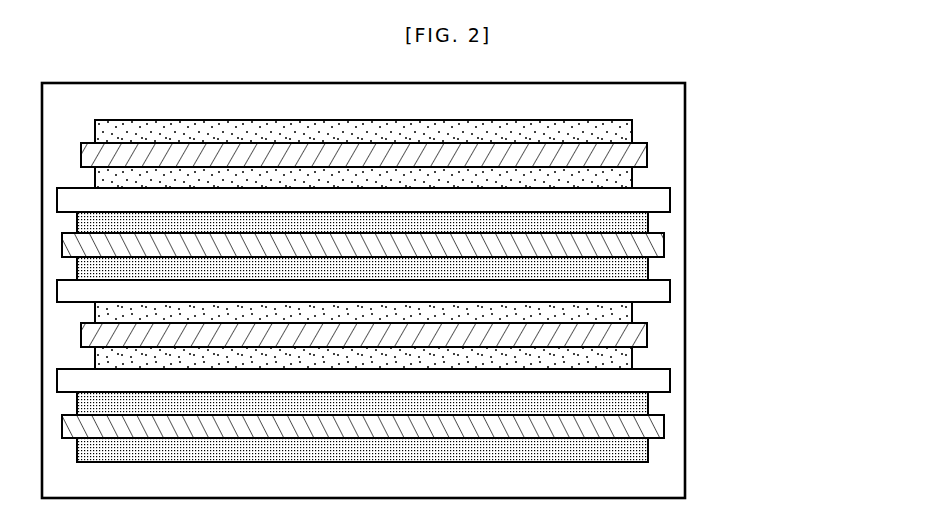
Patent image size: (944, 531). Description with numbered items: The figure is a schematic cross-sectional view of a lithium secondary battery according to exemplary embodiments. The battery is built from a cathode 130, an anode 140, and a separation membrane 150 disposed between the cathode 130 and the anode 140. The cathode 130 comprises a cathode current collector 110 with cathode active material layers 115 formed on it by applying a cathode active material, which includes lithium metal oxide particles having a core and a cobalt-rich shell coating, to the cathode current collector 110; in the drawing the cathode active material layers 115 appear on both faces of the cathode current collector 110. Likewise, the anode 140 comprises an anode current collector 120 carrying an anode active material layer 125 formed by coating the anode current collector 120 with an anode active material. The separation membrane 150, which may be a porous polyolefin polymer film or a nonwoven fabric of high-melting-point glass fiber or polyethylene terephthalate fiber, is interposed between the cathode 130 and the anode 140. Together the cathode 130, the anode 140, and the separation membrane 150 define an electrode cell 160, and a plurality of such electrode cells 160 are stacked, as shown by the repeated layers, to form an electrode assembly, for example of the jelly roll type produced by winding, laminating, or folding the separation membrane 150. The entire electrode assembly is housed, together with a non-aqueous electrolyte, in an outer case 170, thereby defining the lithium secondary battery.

The cathode current collector 110 is at (647, 153).
The cathode active material layers 115 is at (632, 130).
The anode current collector 120 is at (664, 246).
The anode active material layer 125 is at (648, 221).
The cathode 130 is at (451, 244).
The anode 140 is at (441, 337).
The separation membrane 150 is at (658, 198).
The electrode cell 160 is at (469, 291).
The outer case 170 is at (686, 425).